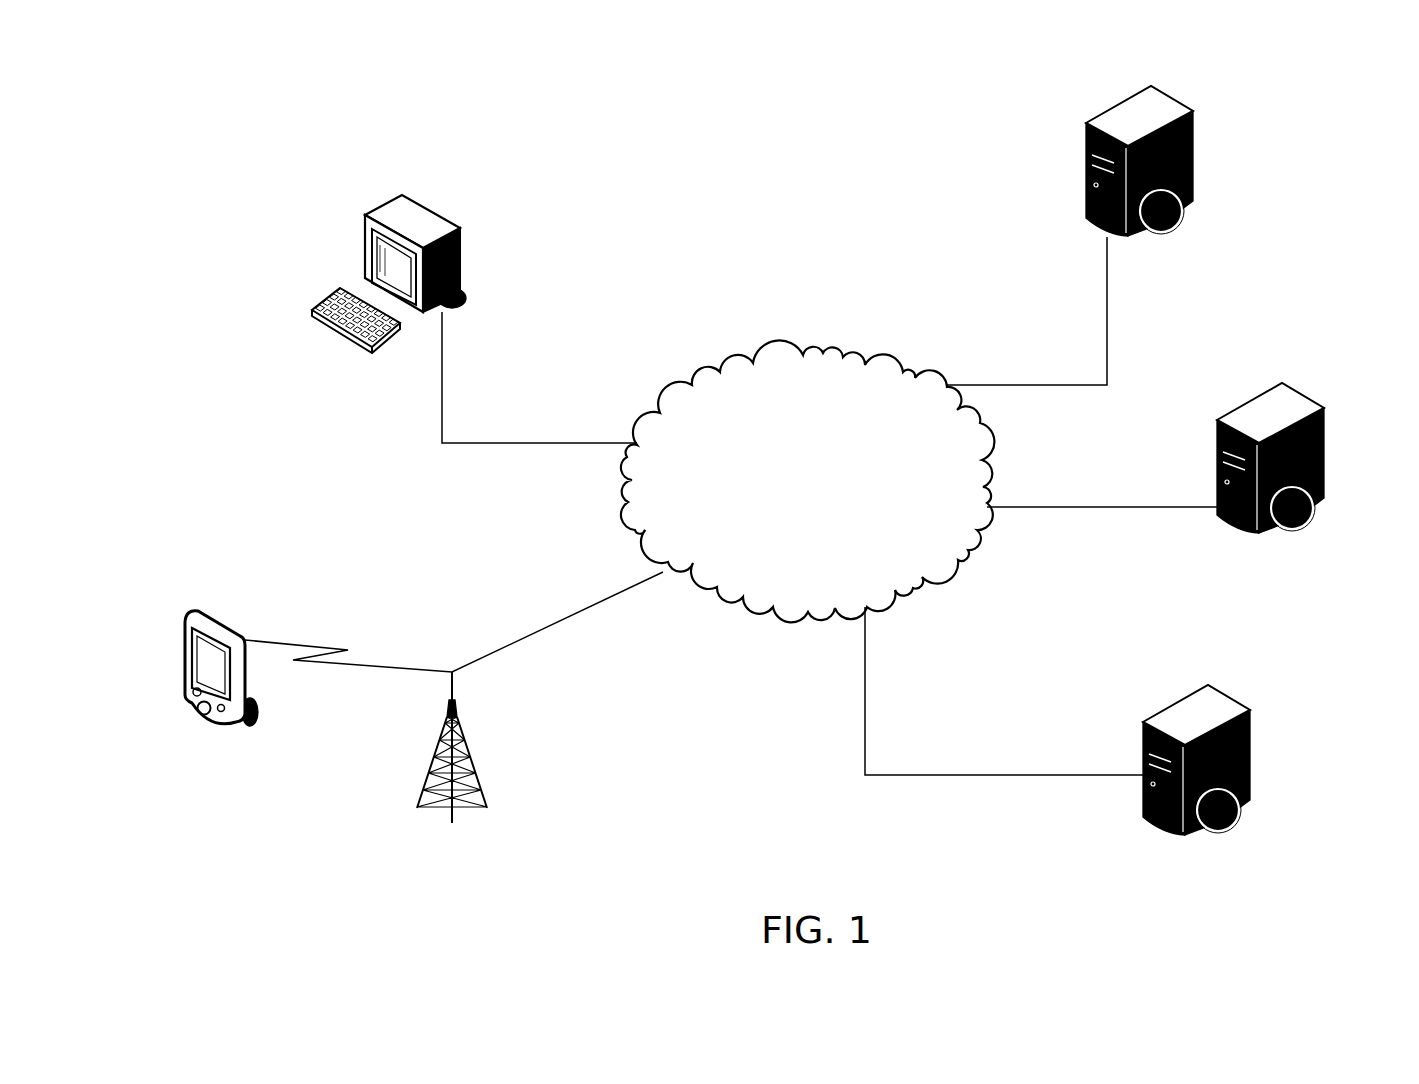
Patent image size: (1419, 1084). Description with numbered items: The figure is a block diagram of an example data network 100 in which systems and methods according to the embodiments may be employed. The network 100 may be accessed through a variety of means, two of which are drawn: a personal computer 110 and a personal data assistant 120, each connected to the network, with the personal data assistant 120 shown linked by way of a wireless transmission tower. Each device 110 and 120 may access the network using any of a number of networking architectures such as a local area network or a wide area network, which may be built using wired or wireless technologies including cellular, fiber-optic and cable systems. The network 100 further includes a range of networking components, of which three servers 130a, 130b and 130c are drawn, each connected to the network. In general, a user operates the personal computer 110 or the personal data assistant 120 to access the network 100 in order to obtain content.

The data network 100 is at (492, 97).
The personal computer 110 is at (412, 198).
The personal data assistant 120 is at (213, 727).
The server 130a is at (1202, 187).
The server 130b is at (1310, 530).
The server 130c is at (1258, 810).